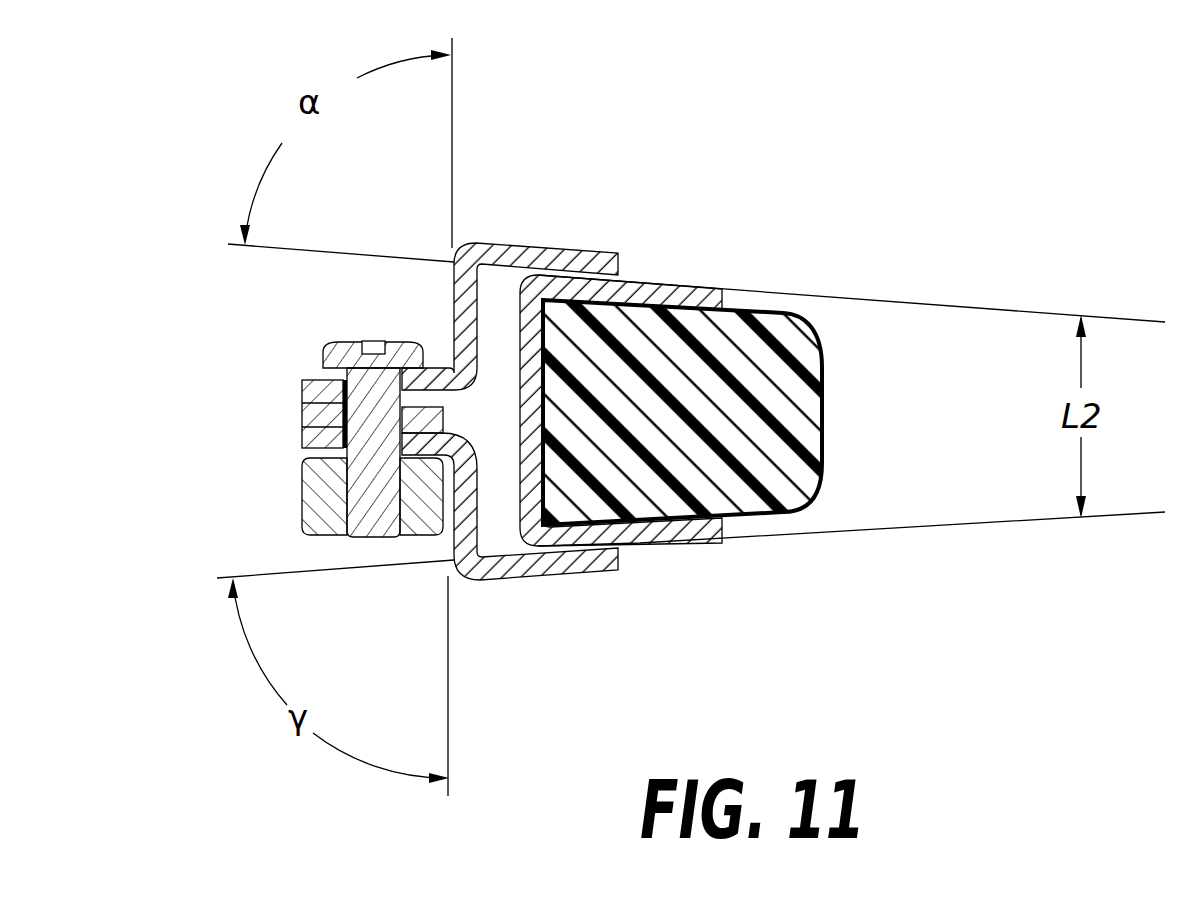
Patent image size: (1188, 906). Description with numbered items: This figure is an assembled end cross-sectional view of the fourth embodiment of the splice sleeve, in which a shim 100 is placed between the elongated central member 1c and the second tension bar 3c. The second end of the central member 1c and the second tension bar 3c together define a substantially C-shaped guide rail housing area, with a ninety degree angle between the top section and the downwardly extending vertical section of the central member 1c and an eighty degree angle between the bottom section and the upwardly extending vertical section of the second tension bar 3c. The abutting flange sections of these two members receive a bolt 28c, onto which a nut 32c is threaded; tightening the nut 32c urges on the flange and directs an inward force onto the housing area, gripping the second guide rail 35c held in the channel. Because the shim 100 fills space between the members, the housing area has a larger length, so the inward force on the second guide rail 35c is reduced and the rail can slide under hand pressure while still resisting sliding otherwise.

The elongated central member 1c is at (517, 242).
The second tension bar 3c is at (530, 580).
The bolt 28c is at (355, 340).
The nut 32c is at (302, 492).
The second guide rail 35c is at (822, 412).
The shim 100 is at (302, 416).